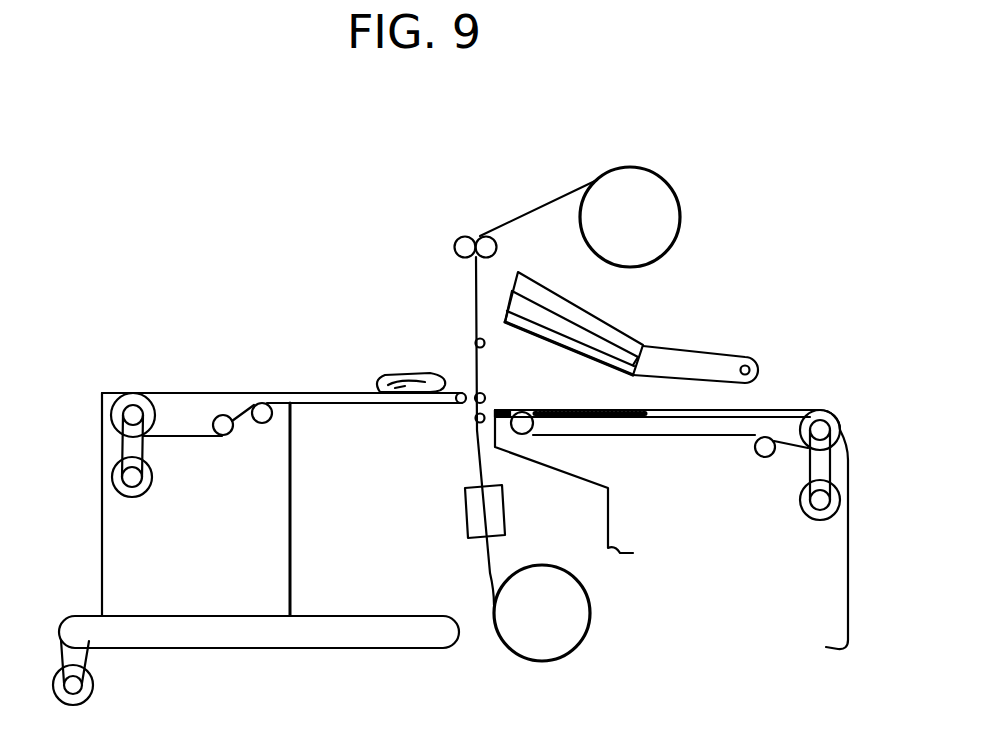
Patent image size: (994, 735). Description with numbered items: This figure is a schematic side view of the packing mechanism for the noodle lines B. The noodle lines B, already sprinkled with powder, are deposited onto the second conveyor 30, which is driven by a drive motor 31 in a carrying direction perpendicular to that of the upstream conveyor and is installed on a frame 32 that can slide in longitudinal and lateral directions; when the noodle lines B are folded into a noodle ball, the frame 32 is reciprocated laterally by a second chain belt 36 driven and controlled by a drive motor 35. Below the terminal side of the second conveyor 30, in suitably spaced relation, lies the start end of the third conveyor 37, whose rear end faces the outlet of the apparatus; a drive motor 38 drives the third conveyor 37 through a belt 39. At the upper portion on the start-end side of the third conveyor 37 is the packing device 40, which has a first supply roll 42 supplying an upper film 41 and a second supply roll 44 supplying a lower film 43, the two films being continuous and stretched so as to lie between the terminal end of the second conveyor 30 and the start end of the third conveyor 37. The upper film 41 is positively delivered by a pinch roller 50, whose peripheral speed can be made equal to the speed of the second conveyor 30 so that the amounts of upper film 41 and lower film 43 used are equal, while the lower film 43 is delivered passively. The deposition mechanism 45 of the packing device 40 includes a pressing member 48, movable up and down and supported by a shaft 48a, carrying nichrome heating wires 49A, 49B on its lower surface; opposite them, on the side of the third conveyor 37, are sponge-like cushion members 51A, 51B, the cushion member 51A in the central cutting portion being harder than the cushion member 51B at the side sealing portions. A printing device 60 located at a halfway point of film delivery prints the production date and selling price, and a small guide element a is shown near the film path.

The second conveyor 30 is at (197, 390).
The drive motor 31 is at (150, 470).
The frame 32 is at (137, 543).
The drive motor 35 is at (95, 682).
The second chain belt 36 is at (290, 648).
The third conveyor 37 is at (787, 408).
The drive motor 38 is at (802, 510).
The belt 39 is at (827, 467).
The packing device 40 is at (668, 275).
The upper film 41 is at (520, 214).
The first supply roll 42 is at (647, 185).
The lower film 43 is at (488, 572).
The second supply roll 44 is at (590, 627).
The deposition mechanism 45 is at (570, 283).
The pressing member 48 is at (605, 335).
The shaft 48a is at (747, 360).
The heating wire 49A is at (503, 327).
The heating wire 49B is at (608, 373).
The pinch roller 50 is at (463, 235).
The cushion member 51A is at (503, 410).
The cushion member 51B is at (613, 417).
The printing device 60 is at (470, 512).
The noodle lines B is at (383, 373).
The guide roller a is at (475, 407).